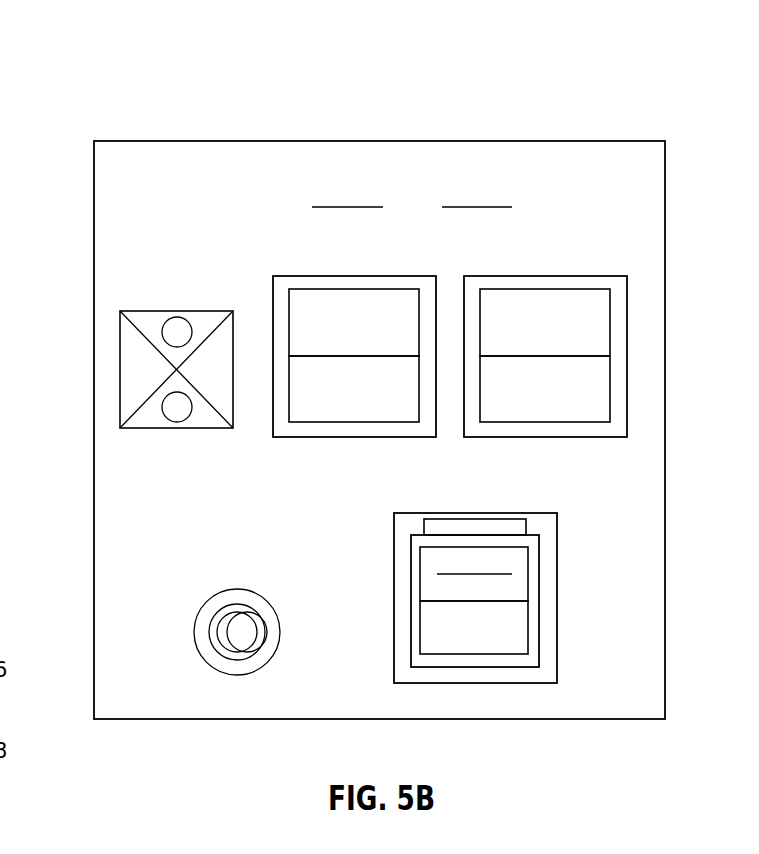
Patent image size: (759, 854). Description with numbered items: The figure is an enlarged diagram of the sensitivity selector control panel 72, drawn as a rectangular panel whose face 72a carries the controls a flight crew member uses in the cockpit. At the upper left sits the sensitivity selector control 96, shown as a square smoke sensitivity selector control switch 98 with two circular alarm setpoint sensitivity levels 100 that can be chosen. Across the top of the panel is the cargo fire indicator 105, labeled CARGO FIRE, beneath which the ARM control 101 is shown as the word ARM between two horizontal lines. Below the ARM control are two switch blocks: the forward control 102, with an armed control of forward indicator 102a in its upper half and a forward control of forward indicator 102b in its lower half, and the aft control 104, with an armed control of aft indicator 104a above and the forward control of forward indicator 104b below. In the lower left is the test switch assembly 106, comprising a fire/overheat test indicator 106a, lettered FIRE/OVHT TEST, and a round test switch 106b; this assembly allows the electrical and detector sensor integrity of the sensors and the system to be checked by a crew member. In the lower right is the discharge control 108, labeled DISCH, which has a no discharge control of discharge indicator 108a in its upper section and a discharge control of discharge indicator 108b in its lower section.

The sensitivity selector control panel 72 is at (374, 376).
The front face of control panel 72a is at (665, 174).
The sensitivity selector control 96 is at (183, 230).
The smoke sensitivity selector control switch 98 is at (120, 325).
The alarm setpoint sensitivity levels 100 is at (169, 309).
The ARM control 101 is at (421, 217).
The forward control 102 is at (314, 349).
The armed control of forward indicator 102a is at (290, 298).
The forward control of forward indicator 102b is at (290, 410).
The aft control 104 is at (598, 330).
The armed control of aft indicator 104a is at (602, 312).
The forward control of forward indicator 104b is at (602, 383).
The cargo fire indicator 105 is at (482, 163).
The test switch assembly 106 is at (147, 600).
The fire/overheat test indicator 106a is at (197, 513).
The test switch 106b is at (215, 643).
The discharge control 108 is at (512, 579).
The no discharge control of discharge indicator 108a is at (519, 580).
The discharge control of discharge indicator 108b is at (523, 629).